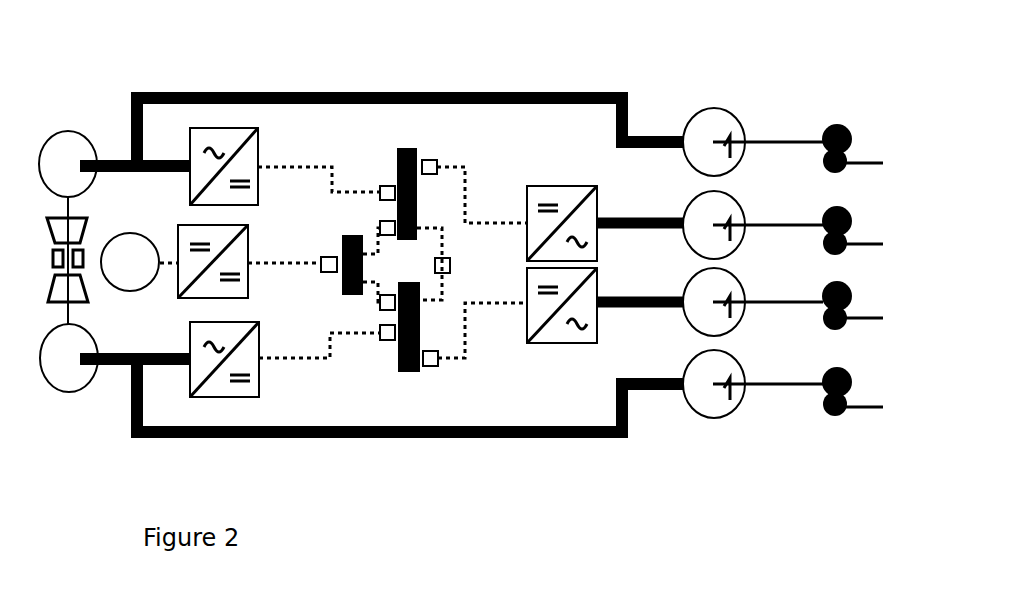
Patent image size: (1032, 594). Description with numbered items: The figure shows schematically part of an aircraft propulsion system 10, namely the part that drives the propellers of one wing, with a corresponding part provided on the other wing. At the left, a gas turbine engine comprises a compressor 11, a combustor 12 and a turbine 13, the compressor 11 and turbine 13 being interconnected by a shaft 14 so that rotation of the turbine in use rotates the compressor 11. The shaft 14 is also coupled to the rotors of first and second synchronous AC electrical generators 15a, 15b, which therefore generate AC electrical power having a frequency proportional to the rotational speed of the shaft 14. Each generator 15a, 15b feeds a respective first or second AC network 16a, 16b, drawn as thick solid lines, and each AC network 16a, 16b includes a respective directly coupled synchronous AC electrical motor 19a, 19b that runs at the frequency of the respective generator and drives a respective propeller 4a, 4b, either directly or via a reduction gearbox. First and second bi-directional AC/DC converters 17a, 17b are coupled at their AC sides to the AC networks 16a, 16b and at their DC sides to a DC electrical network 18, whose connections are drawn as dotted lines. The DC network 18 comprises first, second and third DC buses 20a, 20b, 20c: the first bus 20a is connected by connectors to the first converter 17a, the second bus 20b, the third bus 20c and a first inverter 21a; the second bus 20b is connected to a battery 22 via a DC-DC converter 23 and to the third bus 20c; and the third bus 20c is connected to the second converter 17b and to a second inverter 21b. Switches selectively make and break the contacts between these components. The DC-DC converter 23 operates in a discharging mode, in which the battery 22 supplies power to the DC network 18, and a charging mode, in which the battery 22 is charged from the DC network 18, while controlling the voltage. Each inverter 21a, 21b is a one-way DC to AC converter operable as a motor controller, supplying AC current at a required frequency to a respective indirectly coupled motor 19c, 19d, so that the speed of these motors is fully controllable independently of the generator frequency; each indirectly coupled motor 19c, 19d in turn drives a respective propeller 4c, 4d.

The propulsion system 10 is at (421, 80).
The compressor 11 is at (88, 229).
The combustor 12 is at (53, 258).
The turbine 13 is at (90, 287).
The shaft 14 is at (73, 308).
The first synchronous AC electrical generator 15a is at (67, 131).
The second synchronous AC electrical generator 15b is at (73, 392).
The first AC network 16a is at (250, 92).
The second AC network 16b is at (302, 438).
The first bi-directional AC/DC converter 17a is at (258, 148).
The second bi-directional AC/DC converter 17b is at (259, 385).
The DC electrical network 18 is at (500, 185).
The first directly coupled synchronous AC electrical motor 19a is at (713, 108).
The second directly coupled synchronous AC electrical motor 19b is at (710, 418).
The first indirectly coupled motor 19c is at (738, 198).
The second indirectly coupled motor 19d is at (738, 272).
The first DC bus 20a is at (403, 148).
The second DC bus 20b is at (342, 278).
The third DC bus 20c is at (420, 372).
The first inverter 21a is at (563, 186).
The second inverter 21b is at (562, 343).
The battery 22 is at (127, 233).
The DC-DC converter 23 is at (248, 245).
The propeller 4a is at (837, 126).
The propeller 4b is at (842, 416).
The propeller 4c is at (850, 212).
The propeller 4d is at (852, 295).